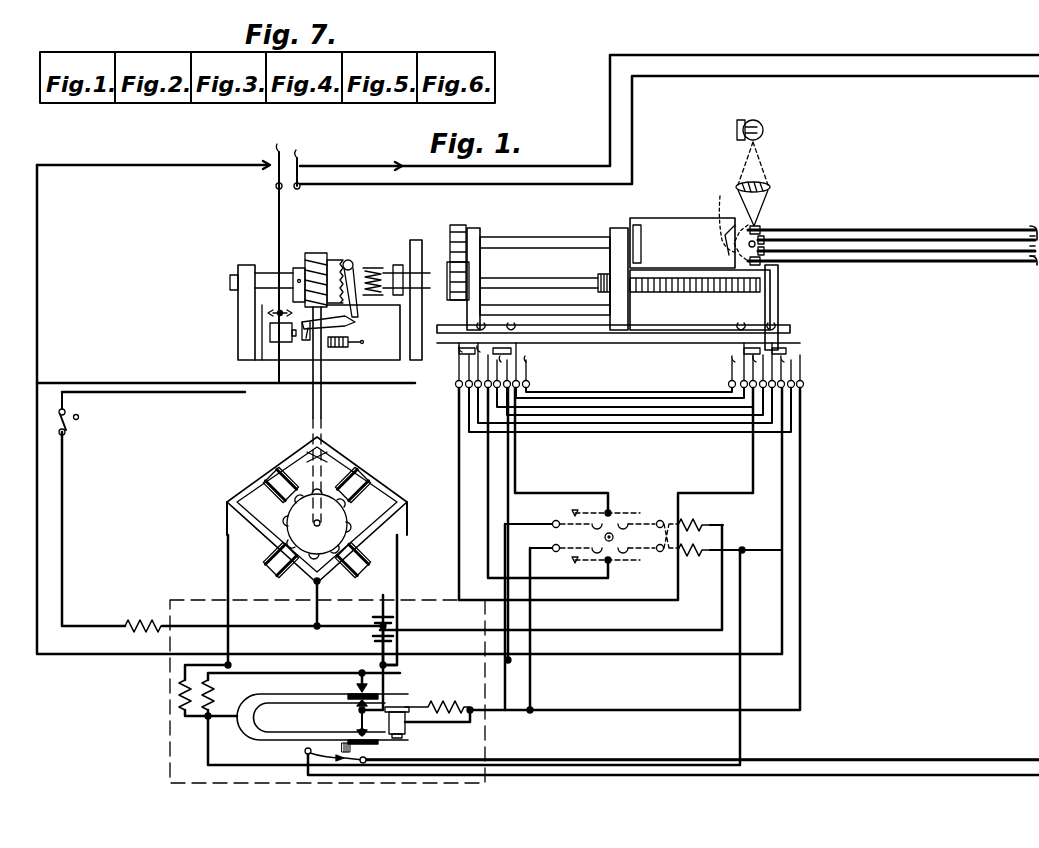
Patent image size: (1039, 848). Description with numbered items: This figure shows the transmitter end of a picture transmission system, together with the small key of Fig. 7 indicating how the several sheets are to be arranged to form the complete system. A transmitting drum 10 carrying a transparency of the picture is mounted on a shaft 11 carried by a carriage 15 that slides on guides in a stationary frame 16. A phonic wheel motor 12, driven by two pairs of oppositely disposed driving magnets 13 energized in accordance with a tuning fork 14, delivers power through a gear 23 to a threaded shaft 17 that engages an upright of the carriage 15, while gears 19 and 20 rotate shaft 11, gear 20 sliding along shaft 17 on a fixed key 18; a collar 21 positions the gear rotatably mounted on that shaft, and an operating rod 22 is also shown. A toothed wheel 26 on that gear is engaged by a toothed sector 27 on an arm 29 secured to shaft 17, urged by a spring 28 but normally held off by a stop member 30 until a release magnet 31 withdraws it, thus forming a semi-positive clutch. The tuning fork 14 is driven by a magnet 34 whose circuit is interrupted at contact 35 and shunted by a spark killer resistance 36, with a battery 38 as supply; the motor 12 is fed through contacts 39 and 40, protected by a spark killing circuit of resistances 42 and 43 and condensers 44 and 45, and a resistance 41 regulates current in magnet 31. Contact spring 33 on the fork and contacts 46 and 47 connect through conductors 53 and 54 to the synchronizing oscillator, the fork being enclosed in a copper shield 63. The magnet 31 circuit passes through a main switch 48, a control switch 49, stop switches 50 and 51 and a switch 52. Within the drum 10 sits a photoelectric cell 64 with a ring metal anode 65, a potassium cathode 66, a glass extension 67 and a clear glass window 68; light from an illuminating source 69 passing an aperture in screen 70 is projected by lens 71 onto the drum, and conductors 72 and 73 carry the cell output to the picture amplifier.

The transmitting drum 10 is at (676, 232).
The shaft 11 is at (575, 238).
The phonic wheel motor 12 is at (328, 510).
The driving magnets 13 is at (348, 517).
The tuning fork 14 is at (308, 717).
The carriage 15 is at (560, 335).
The stationary frame 16 is at (778, 303).
The shaft 17 is at (598, 278).
The fixed key 18 is at (523, 278).
The gear 19 is at (452, 230).
The gear 20 is at (450, 265).
The collar 21 is at (303, 266).
The operating rod 22 is at (326, 428).
The gear 23 is at (318, 256).
The toothed wheel 26 is at (342, 258).
The toothed sector 27 is at (358, 305).
The spring 28 is at (370, 266).
The arm 29 is at (352, 320).
The stop member 30 is at (362, 343).
The release magnet 31 is at (270, 333).
The contact spring 33 is at (342, 745).
The magnet 34 is at (406, 725).
The contact 35 is at (358, 735).
The spark killer resistance 36 is at (445, 706).
The battery 110V 38 is at (722, 528).
The contact 39 is at (359, 710).
The contact 40 is at (358, 690).
The resistance 41 is at (128, 621).
The resistance 42 is at (184, 712).
The resistance 43 is at (212, 702).
The condenser 44 is at (372, 618).
The condenser 45 is at (372, 637).
The contact 46 is at (348, 697).
The contact 47 is at (304, 753).
The main switch 48 is at (68, 430).
The control switch 49 is at (664, 550).
The stop switch 50 is at (459, 372).
The stop switch 51 is at (790, 345).
The switch 52 is at (297, 156).
The conductor 53 is at (895, 758).
The conductor 54 is at (935, 775).
The copper shield 63 is at (176, 610).
The photoelectric cell 64 is at (812, 238).
The metal anode 65 is at (727, 200).
The potassium cathode 66 is at (724, 222).
The glass extension 67 is at (846, 248).
The clear glass window 68 is at (764, 229).
The illuminating source 69 is at (763, 128).
The screen 70 is at (770, 155).
The lens 71 is at (768, 190).
The conductor 72 is at (985, 232).
The conductor 73 is at (978, 262).